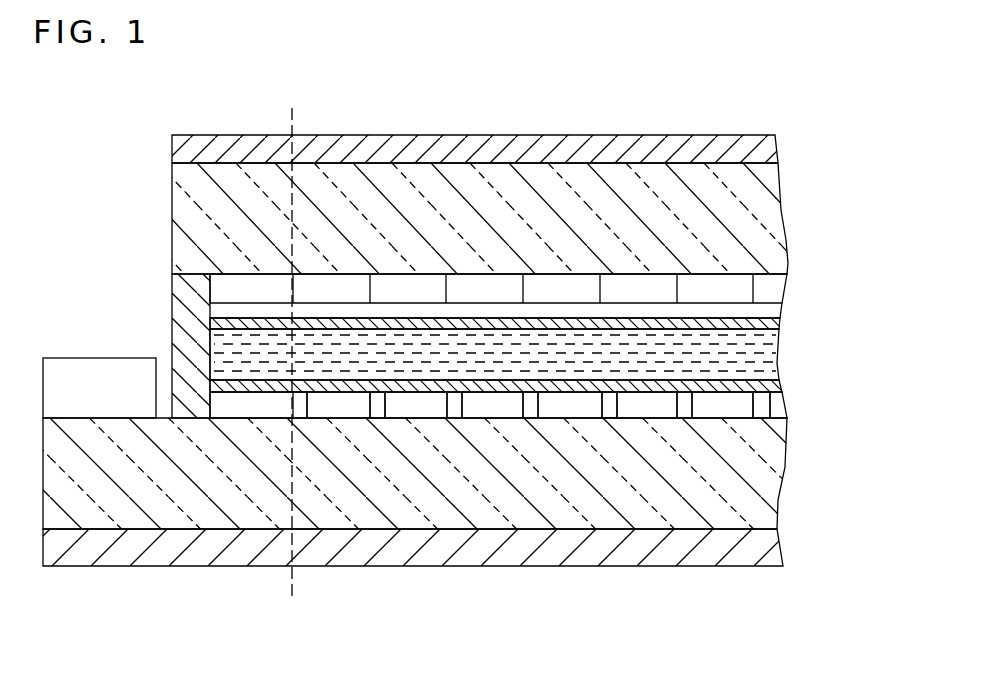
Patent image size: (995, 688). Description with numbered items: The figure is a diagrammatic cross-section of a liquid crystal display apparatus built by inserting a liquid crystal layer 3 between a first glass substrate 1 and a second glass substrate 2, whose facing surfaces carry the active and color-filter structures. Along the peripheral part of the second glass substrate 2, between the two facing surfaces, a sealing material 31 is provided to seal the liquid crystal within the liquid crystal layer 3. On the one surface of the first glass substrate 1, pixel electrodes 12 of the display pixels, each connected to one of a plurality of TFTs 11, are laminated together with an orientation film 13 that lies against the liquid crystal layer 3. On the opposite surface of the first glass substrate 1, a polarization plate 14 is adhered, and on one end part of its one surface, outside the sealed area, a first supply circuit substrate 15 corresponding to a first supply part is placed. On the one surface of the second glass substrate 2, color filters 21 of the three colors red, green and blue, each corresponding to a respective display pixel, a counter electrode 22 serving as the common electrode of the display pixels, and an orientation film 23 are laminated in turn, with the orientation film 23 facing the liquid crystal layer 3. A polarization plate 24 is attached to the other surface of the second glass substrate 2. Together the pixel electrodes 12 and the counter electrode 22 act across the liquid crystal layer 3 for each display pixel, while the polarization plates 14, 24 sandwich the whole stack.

The first glass substrate 1 is at (773, 462).
The second glass substrate 2 is at (768, 213).
The liquid crystal layer 3 is at (768, 350).
The TFTs 11 is at (303, 407).
The pixel electrodes 12 is at (343, 405).
The orientation film 13 is at (770, 383).
The polarization plate 14 is at (772, 555).
The first supply circuit substrate 15 is at (92, 367).
The color filters 21 is at (350, 283).
The counter electrode 22 is at (775, 312).
The orientation film 23 is at (768, 325).
The polarization plate 24 is at (770, 150).
The sealing material 31 is at (177, 313).